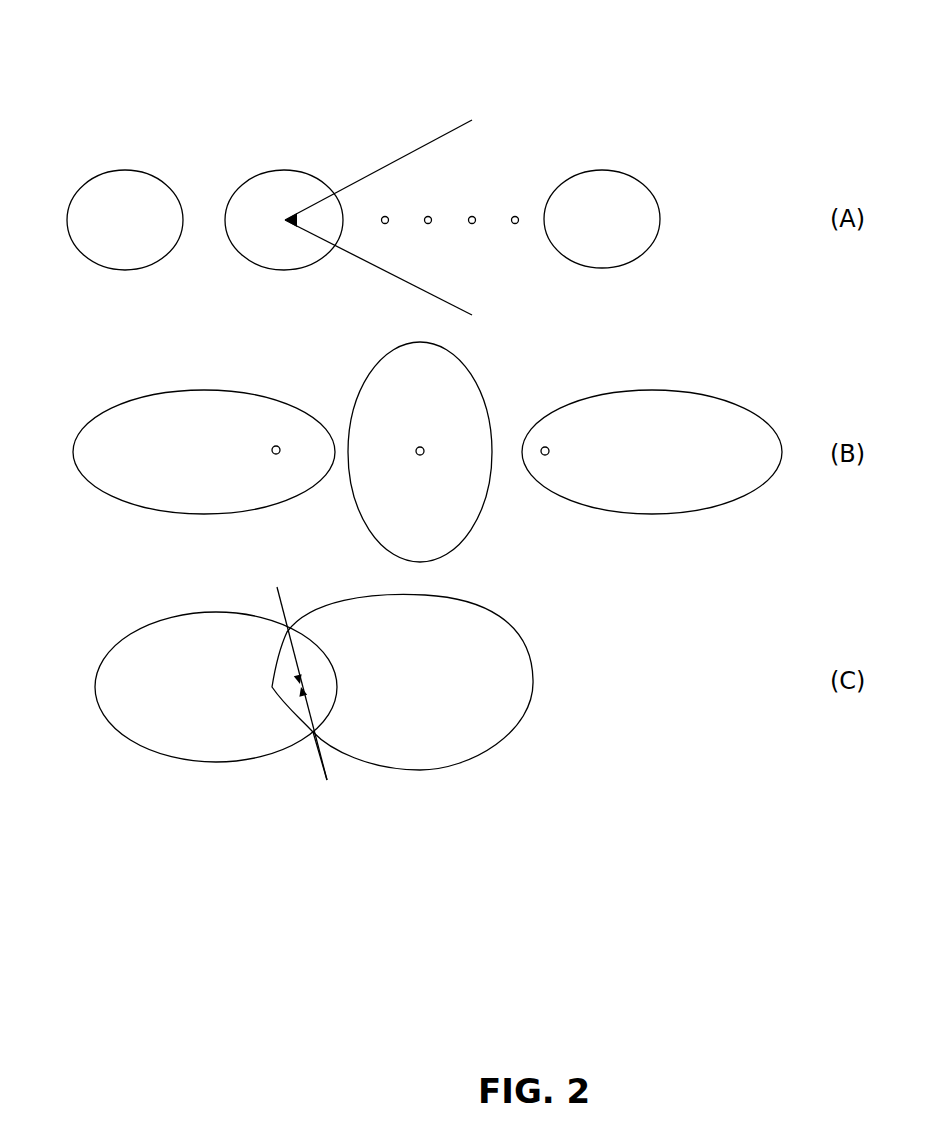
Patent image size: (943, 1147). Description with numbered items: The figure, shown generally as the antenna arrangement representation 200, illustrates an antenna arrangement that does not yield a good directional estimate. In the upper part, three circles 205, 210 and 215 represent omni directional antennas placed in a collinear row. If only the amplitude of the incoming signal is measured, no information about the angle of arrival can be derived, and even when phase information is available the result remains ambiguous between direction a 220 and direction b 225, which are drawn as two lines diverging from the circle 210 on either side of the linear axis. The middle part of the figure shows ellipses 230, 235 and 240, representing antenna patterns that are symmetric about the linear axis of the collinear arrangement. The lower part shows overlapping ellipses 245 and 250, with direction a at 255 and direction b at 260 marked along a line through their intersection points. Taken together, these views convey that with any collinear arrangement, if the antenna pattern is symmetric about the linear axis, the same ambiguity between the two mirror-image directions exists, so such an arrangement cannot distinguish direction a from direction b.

The antenna arrangement representation 200 is at (472, 70).
The circle representing omni directional antenna 205 is at (132, 165).
The circle representing omni directional antenna 210 is at (287, 165).
The circle representing omni directional antenna 215 is at (625, 165).
The direction a 220 is at (420, 153).
The direction b 225 is at (468, 313).
The ellipse 230 is at (198, 383).
The ellipse 235 is at (372, 373).
The ellipse 240 is at (632, 387).
The overlapping ellipse 245 is at (192, 758).
The overlapping ellipse 250 is at (517, 737).
The direction a 255 is at (272, 593).
The direction b 260 is at (320, 763).